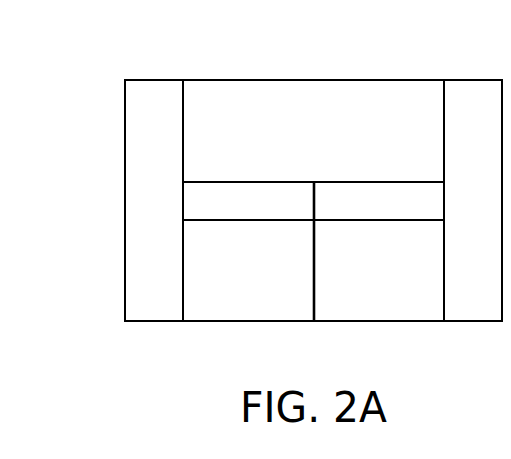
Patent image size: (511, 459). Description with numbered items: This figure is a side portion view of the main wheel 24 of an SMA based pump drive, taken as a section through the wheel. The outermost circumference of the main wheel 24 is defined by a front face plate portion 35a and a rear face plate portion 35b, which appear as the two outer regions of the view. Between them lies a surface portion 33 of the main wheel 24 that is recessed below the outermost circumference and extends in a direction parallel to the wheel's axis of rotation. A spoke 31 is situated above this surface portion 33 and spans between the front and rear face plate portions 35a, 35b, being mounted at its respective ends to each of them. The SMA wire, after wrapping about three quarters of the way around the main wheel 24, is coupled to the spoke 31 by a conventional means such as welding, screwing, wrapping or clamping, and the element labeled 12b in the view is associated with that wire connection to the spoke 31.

The main wheel 24 is at (230, 80).
The surface portion 33 is at (320, 86).
The spoke 31 is at (390, 191).
The central divider 12b is at (313, 266).
The front face plate portion 35a is at (157, 311).
The rear face plate portion 35b is at (478, 312).